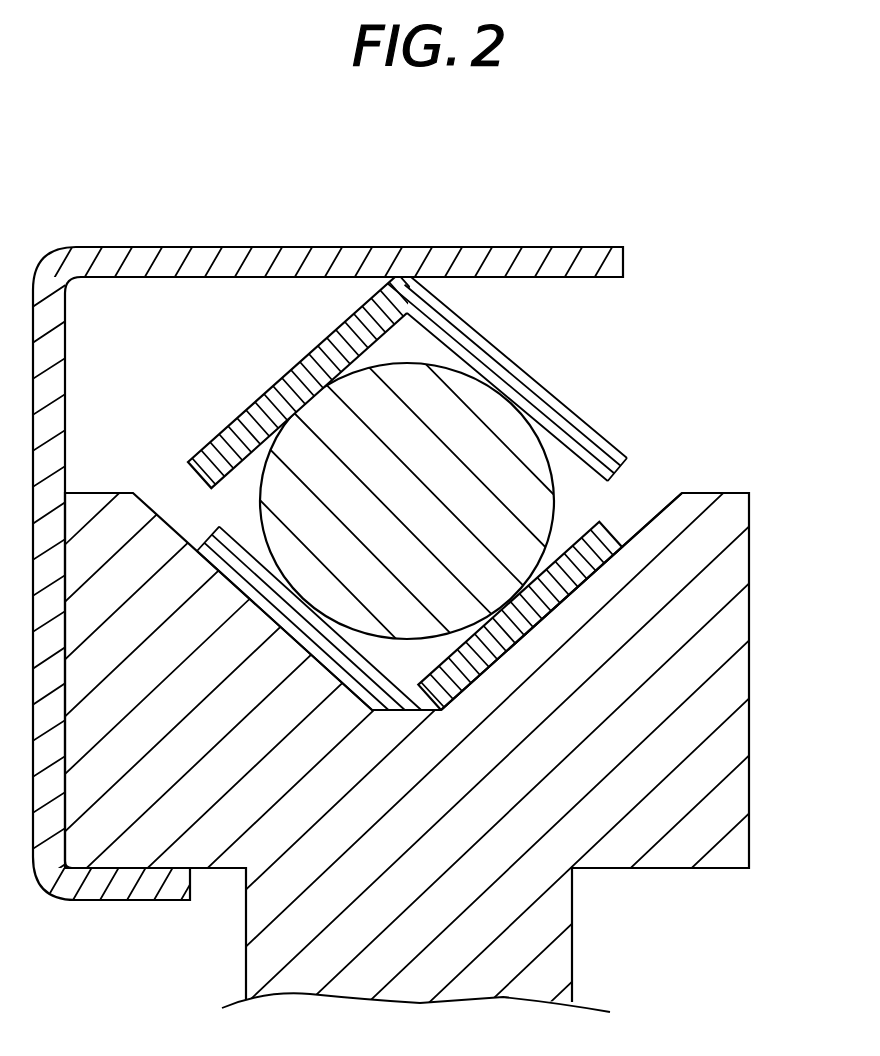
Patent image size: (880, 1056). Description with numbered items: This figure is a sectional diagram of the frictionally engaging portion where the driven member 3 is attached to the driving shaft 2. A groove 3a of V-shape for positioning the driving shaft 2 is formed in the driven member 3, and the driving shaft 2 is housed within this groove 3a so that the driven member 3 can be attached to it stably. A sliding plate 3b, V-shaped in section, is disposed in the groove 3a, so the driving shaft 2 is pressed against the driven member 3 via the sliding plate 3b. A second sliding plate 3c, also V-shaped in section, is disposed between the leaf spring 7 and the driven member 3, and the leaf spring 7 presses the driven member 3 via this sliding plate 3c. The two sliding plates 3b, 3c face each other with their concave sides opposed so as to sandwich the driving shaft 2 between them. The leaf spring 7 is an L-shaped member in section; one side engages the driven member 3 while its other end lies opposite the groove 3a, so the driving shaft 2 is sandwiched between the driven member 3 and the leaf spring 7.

The driving shaft 2 is at (508, 424).
The driven member 3 is at (750, 555).
The groove 3a is at (658, 512).
The sliding plate 3b is at (207, 520).
The sliding plate 3c is at (252, 405).
The leaf spring 7 is at (268, 249).